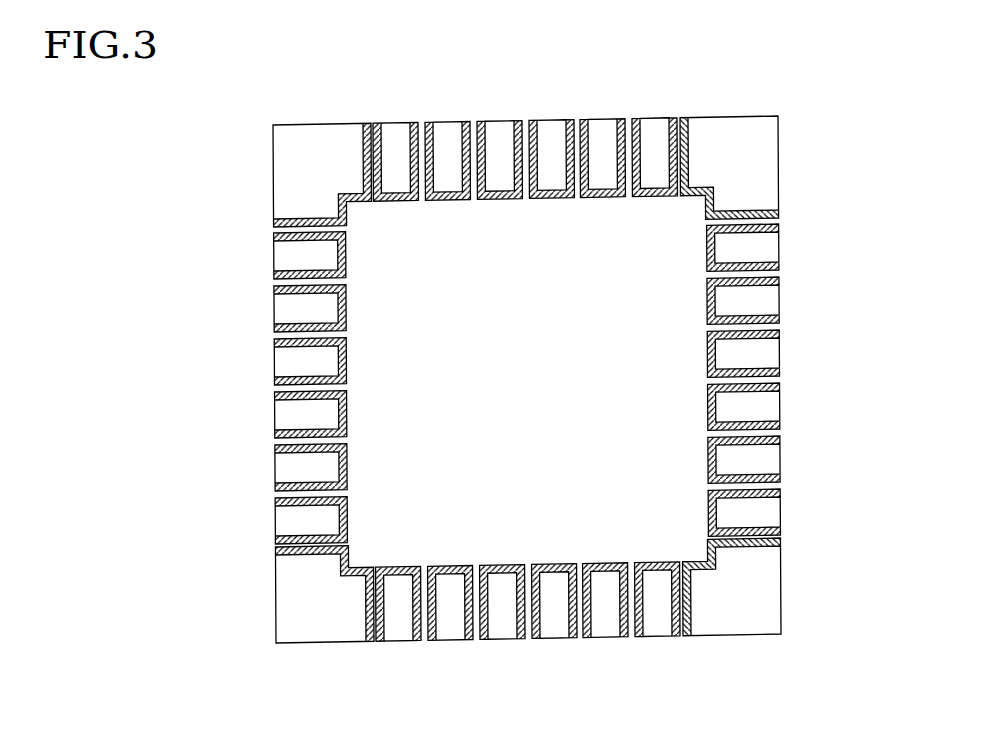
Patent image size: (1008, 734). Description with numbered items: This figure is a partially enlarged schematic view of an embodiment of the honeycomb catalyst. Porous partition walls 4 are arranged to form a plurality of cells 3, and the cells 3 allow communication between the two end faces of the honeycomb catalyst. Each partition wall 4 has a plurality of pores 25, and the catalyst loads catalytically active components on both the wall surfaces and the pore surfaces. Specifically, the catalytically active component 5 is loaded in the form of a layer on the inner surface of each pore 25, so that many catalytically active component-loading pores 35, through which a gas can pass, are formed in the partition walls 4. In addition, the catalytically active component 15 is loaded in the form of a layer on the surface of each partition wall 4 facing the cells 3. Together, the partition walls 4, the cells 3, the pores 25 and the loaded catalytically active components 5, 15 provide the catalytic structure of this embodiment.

The cell 3 is at (665, 246).
The partition wall 4 is at (498, 150).
The catalytically active component 5 is at (757, 367).
The catalytically active component 15 is at (335, 312).
The catalytically active component-loading pore 35 is at (243, 441).
The pore 25 is at (307, 487).